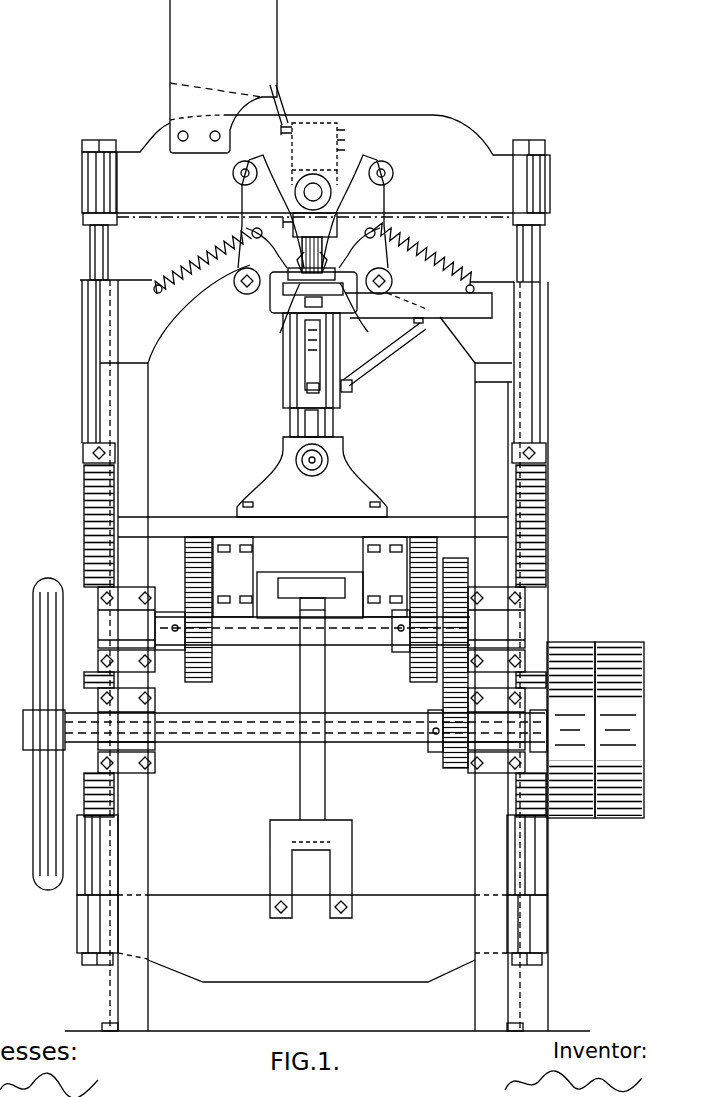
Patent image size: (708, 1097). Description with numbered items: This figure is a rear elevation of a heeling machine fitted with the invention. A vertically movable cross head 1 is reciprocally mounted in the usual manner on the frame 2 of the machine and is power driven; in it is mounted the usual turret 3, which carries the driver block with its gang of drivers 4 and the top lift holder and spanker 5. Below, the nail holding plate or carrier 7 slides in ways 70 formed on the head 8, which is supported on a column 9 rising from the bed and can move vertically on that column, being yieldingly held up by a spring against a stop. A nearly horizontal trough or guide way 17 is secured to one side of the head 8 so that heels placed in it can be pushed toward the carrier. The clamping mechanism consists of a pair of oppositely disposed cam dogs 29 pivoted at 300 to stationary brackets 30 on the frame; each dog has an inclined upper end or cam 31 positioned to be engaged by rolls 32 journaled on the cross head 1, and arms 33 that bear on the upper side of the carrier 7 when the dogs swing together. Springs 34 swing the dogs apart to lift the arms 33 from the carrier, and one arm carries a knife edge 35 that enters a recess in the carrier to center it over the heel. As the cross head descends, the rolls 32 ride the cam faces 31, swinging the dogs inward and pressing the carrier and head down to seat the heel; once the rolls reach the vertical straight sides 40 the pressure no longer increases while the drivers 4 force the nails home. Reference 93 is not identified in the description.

The cross head 1 is at (462, 135).
The frame 2 is at (485, 477).
The turret 3 is at (291, 207).
The drivers 4 is at (291, 253).
The top lift holder and spanker 5 is at (328, 120).
The nail holding plate or carrier 7 is at (283, 270).
The head 8 is at (290, 357).
The column 9 is at (293, 421).
The trough or guide way 17 is at (483, 307).
The cam dogs 29 is at (242, 198).
The stationary brackets 30 is at (195, 300).
The cam 31 is at (242, 185).
The rolls 32 is at (253, 150).
The arms 33 is at (313, 300).
The springs 34 is at (196, 266).
The knife edge 35 is at (358, 349).
The straight sides 40 is at (398, 226).
The ways 70 is at (293, 294).
The guide 93 is at (327, 313).
The pivot 300 is at (242, 291).